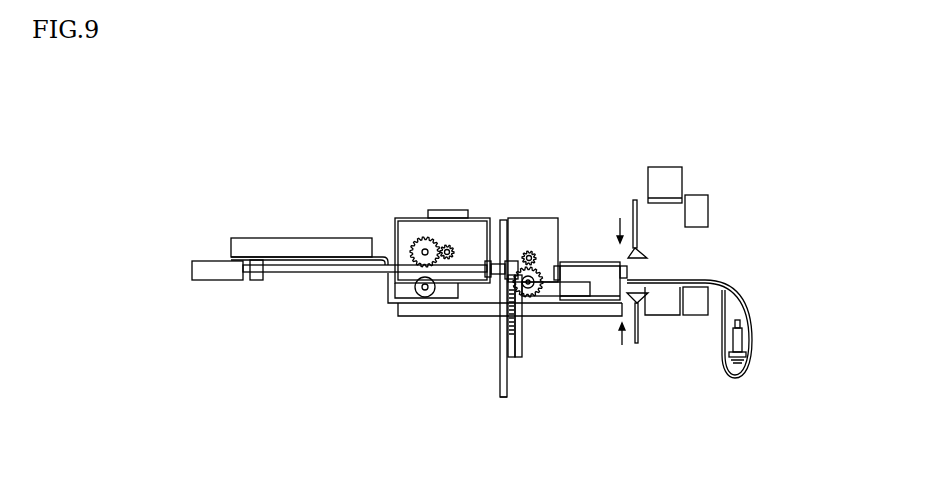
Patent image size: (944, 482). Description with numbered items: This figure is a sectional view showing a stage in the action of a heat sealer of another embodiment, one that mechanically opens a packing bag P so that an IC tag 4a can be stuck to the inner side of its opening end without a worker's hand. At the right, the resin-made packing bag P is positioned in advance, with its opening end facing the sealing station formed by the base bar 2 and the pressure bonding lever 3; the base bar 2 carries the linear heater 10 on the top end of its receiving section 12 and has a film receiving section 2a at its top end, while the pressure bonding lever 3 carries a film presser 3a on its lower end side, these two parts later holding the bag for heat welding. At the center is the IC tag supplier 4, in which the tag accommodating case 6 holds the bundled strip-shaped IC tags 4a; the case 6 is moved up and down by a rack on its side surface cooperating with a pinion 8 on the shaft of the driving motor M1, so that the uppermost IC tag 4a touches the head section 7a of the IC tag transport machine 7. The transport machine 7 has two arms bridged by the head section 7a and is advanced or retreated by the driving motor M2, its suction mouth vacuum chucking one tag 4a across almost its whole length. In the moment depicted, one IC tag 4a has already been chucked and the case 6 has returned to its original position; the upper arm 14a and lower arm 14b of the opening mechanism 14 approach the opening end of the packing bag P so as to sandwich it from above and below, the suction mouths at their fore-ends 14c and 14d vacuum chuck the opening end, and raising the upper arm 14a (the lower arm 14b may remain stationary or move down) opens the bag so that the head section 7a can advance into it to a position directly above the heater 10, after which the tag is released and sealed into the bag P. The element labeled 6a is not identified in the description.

The base bar 2 is at (594, 345).
The film receiving section 2a is at (698, 318).
The pressure bonding lever 3 is at (668, 168).
The film presser 3a is at (701, 196).
The IC tag supplier 4 is at (490, 332).
The IC tag 4a is at (523, 355).
The tag accommodating case 6 is at (505, 352).
The slide bar 6a is at (527, 340).
The IC tag transport machine 7 is at (300, 273).
The head section 7a is at (512, 262).
The pinion 8 is at (540, 318).
The linear heater 10 is at (667, 279).
The receiving section 12 is at (664, 312).
The opening mechanism 14 is at (633, 279).
The upper arm 14a is at (634, 203).
The lower arm 14b is at (640, 333).
The fore-end 14c is at (642, 254).
The fore-end 14d is at (625, 295).
The driving motor M1 is at (507, 219).
The driving motor M2 is at (418, 218).
The packing bag P is at (738, 300).